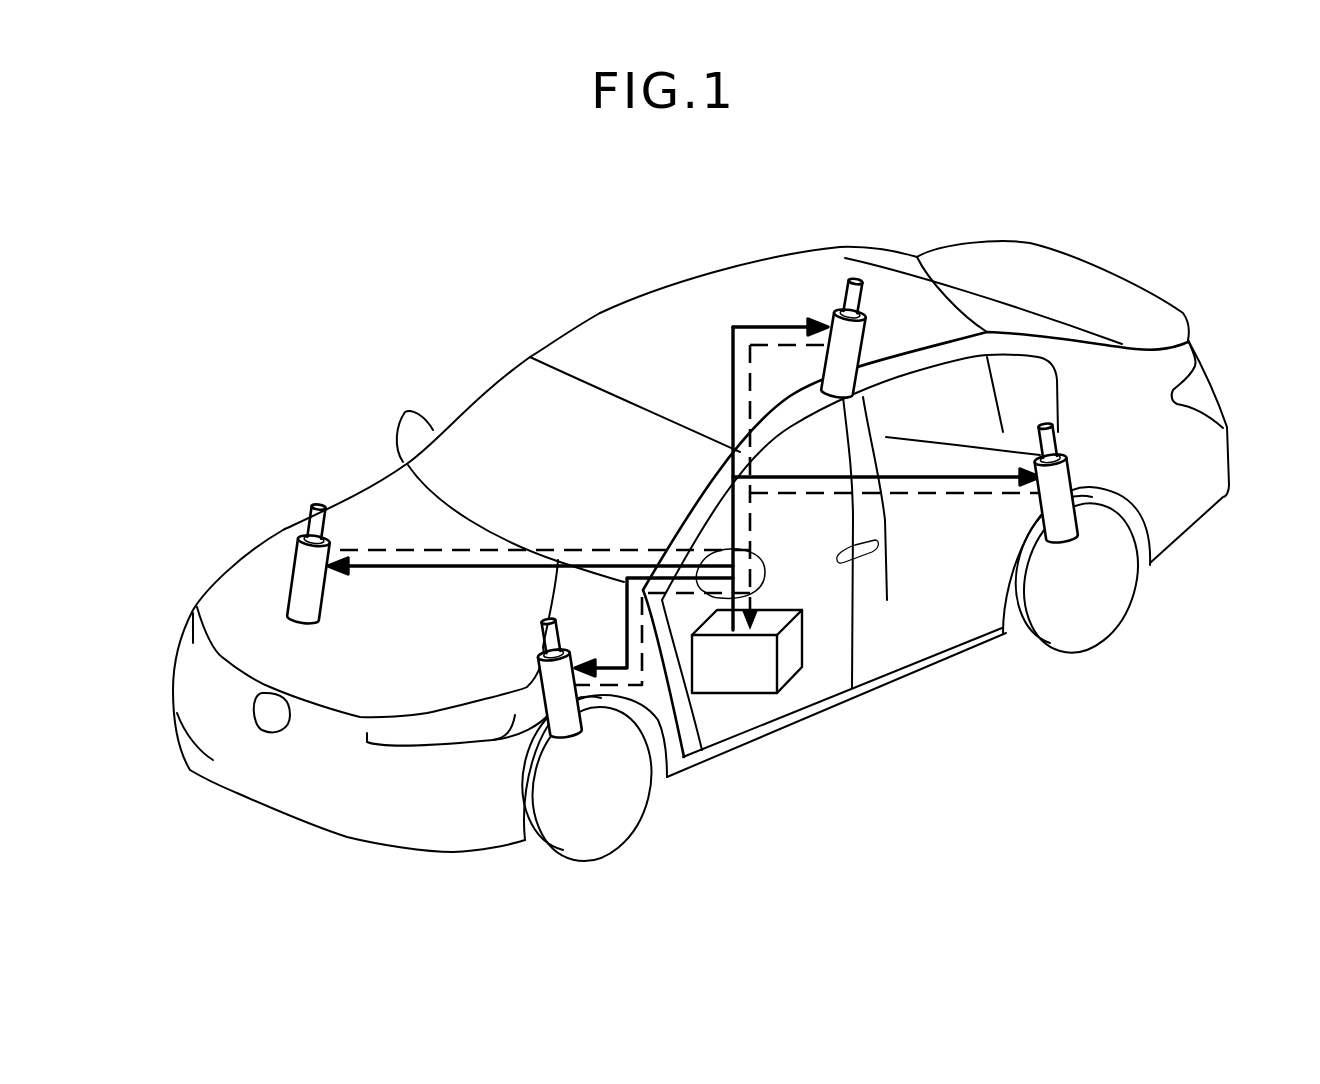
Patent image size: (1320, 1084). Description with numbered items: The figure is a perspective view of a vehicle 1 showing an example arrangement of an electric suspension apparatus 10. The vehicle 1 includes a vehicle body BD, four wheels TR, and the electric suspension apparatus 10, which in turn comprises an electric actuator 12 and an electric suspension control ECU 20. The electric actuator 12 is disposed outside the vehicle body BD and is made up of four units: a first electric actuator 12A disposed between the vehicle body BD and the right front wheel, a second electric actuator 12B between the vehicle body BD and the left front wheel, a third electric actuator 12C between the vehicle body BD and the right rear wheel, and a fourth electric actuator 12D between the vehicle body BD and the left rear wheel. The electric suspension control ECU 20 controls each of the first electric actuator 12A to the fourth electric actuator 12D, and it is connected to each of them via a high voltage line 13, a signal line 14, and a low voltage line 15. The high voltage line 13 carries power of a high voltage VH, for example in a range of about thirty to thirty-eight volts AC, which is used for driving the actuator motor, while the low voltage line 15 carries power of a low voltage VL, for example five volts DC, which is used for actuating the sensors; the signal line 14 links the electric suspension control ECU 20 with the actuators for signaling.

The vehicle 1 is at (797, 162).
The vehicle body BD is at (648, 270).
The wheel TR is at (583, 840).
The electric suspension apparatus 10 is at (652, 510).
The electric actuator 12 is at (680, 550).
The first electric actuator 12A is at (287, 588).
The second electric actuator 12B is at (545, 720).
The third electric actuator 12C is at (880, 333).
The fourth electric actuator 12D is at (1080, 475).
The high voltage line 13 is at (812, 478).
The high voltage VH is at (684, 497).
The signal line 14 is at (940, 493).
The low voltage line 15 is at (682, 515).
The low voltage VL is at (682, 515).
The electric suspension control ECU 20 is at (727, 695).